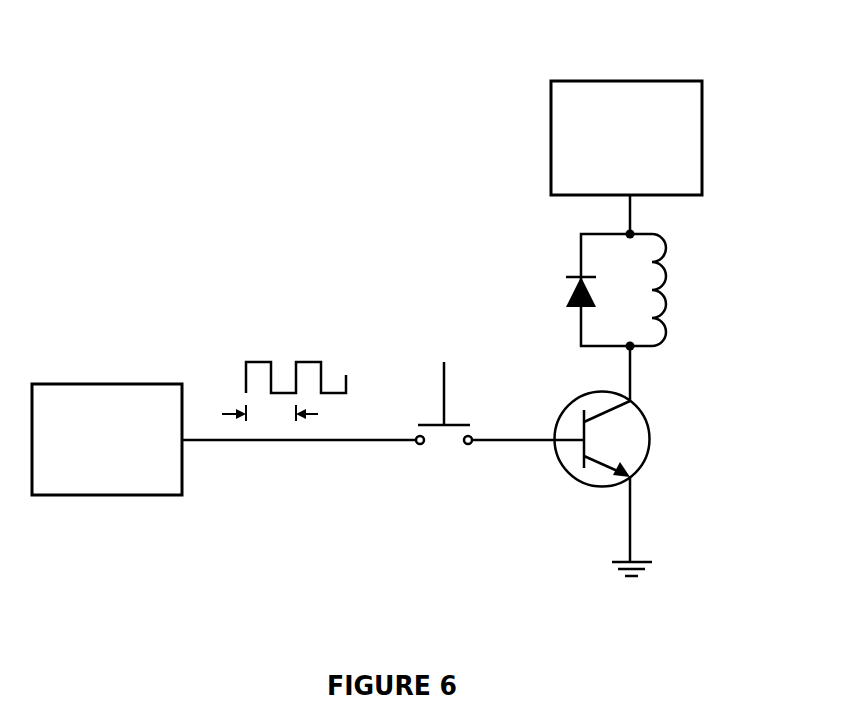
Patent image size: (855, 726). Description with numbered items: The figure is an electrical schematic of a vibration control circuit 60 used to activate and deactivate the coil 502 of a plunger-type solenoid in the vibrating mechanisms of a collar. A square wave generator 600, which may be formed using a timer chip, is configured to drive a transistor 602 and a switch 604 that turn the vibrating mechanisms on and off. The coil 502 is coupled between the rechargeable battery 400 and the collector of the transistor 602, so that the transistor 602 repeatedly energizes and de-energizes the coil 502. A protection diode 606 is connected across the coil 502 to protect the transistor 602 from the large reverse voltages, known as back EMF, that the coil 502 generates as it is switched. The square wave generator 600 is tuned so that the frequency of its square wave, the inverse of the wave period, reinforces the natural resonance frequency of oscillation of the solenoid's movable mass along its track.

The vibration control circuit 60 is at (320, 198).
The rechargeable battery 400 is at (621, 77).
The coil 502 is at (675, 290).
The square wave generator 600 is at (106, 380).
The transistor 602 is at (657, 437).
The switch 604 is at (437, 467).
The protection diode 606 is at (550, 283).